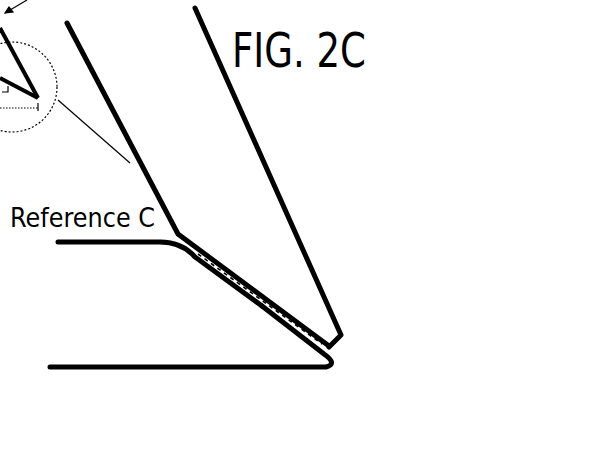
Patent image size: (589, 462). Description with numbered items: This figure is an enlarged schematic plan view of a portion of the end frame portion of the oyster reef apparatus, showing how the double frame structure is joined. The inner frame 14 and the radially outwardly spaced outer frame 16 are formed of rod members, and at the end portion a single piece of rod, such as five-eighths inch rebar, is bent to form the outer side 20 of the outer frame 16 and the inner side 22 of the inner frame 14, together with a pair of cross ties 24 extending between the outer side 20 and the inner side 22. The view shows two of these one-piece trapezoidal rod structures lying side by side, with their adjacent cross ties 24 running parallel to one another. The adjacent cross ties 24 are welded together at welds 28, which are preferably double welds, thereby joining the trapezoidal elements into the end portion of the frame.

The inner frame 14 is at (129, 89).
The outer frame 16 is at (200, 352).
The outer side 20 is at (275, 173).
The inner side 22 is at (148, 177).
The cross ties 24 is at (205, 256).
The welds 28 is at (249, 283).